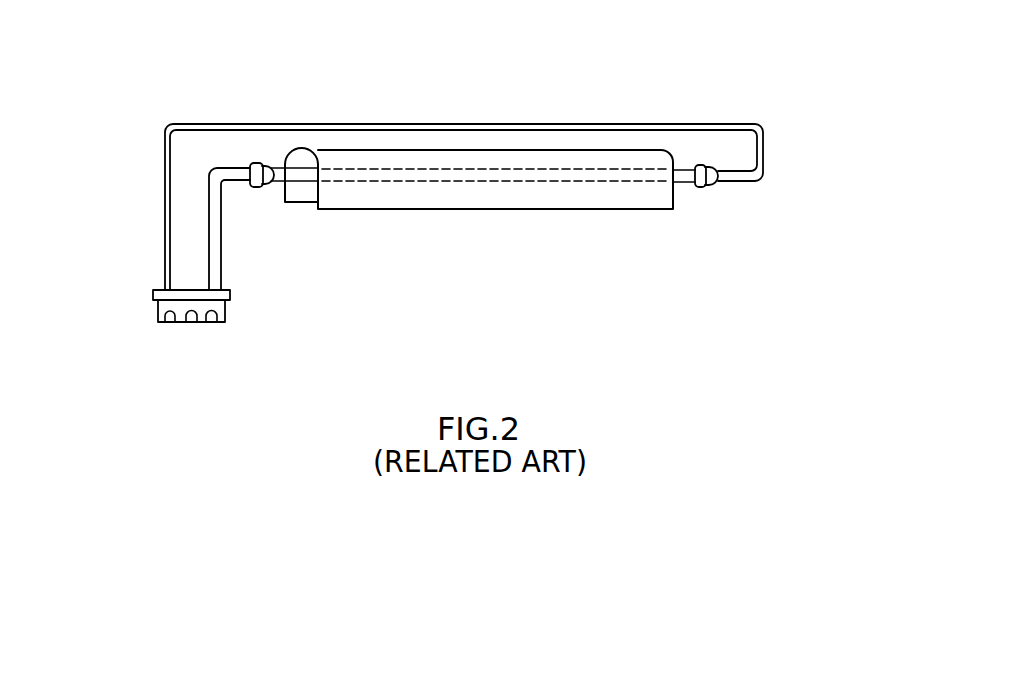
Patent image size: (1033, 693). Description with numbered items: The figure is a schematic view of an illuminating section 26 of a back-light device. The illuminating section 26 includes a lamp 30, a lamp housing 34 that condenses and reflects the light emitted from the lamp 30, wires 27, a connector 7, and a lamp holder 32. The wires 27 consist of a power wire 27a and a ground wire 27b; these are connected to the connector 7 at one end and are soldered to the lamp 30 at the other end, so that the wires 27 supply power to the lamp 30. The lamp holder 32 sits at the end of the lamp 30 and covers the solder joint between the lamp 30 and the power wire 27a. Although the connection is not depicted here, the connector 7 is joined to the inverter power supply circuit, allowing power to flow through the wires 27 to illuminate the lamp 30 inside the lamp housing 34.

The illuminating section 26 is at (640, 88).
The wires 27 is at (70, 188).
The power wire 27a is at (213, 225).
The ground wire 27b is at (165, 252).
The lamp 30 is at (688, 190).
The lamp holder 32 is at (265, 186).
The lamp housing 34 is at (547, 200).
The connector 7 is at (179, 321).